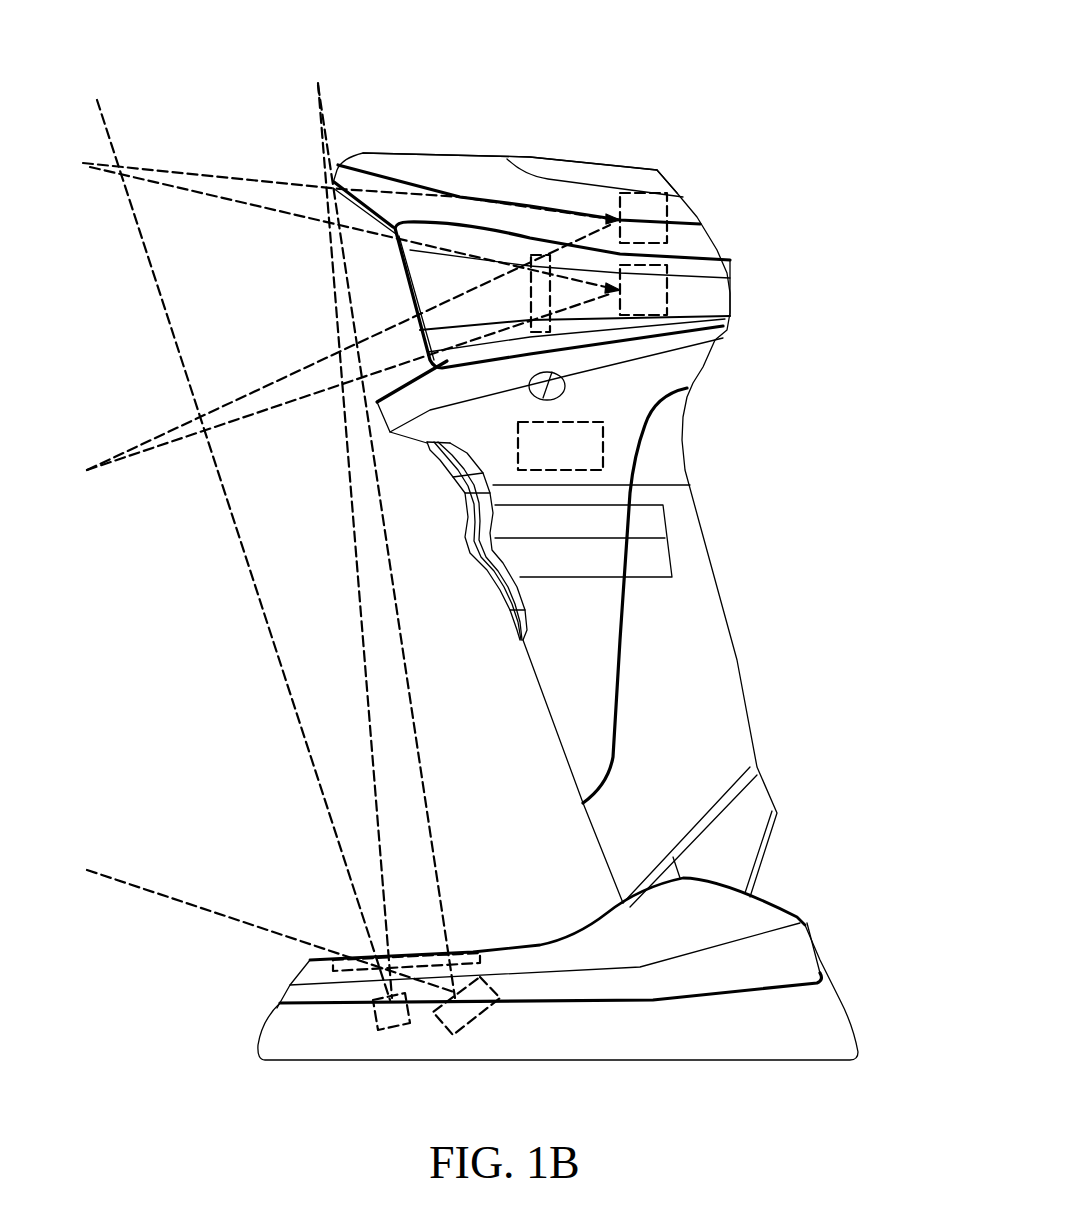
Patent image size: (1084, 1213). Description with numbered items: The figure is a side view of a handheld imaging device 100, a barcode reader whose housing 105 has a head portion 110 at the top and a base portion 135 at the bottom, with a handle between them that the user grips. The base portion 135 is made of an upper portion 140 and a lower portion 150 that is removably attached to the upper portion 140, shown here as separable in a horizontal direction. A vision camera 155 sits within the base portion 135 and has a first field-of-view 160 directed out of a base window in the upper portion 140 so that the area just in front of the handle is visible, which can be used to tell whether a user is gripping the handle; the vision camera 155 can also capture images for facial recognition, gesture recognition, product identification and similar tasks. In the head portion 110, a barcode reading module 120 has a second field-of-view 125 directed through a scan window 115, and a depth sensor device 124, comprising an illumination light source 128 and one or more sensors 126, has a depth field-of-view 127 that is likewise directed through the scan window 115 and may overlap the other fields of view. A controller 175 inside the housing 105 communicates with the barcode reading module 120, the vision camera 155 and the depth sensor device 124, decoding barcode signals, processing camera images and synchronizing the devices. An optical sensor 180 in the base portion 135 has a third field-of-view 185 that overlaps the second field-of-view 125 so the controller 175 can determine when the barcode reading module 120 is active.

The handheld imaging device 100 is at (158, 46).
The housing 105 is at (742, 372).
The head portion 110 is at (431, 220).
The scan window 115 is at (533, 243).
The barcode reading module 120 is at (655, 290).
The depth sensor device 124 is at (653, 193).
The second field-of-view 125 is at (214, 193).
The sensors 126 is at (668, 230).
The depth field-of-view 127 is at (281, 184).
The illumination light source 128 is at (668, 208).
The base portion 135 is at (543, 947).
The upper portion 140 is at (803, 957).
The lower portion 150 is at (840, 1022).
The vision camera 155 is at (473, 1012).
The first field-of-view 160 is at (410, 666).
The controller 175 is at (590, 447).
The optical sensor 180 is at (378, 1012).
The third field-of-view 185 is at (262, 614).